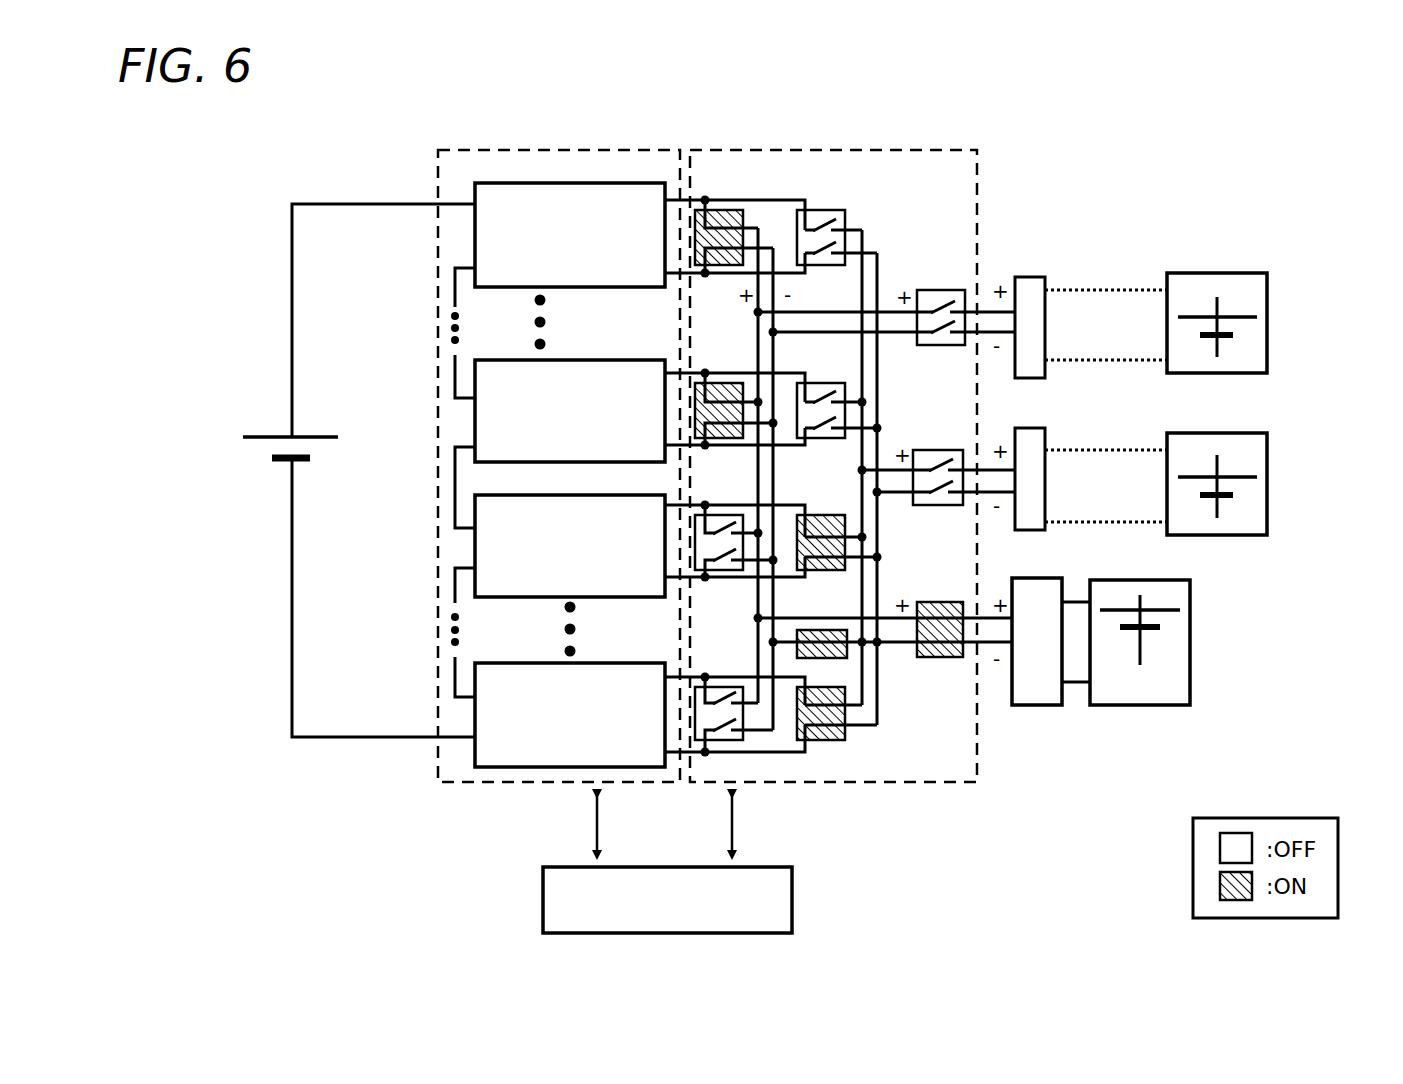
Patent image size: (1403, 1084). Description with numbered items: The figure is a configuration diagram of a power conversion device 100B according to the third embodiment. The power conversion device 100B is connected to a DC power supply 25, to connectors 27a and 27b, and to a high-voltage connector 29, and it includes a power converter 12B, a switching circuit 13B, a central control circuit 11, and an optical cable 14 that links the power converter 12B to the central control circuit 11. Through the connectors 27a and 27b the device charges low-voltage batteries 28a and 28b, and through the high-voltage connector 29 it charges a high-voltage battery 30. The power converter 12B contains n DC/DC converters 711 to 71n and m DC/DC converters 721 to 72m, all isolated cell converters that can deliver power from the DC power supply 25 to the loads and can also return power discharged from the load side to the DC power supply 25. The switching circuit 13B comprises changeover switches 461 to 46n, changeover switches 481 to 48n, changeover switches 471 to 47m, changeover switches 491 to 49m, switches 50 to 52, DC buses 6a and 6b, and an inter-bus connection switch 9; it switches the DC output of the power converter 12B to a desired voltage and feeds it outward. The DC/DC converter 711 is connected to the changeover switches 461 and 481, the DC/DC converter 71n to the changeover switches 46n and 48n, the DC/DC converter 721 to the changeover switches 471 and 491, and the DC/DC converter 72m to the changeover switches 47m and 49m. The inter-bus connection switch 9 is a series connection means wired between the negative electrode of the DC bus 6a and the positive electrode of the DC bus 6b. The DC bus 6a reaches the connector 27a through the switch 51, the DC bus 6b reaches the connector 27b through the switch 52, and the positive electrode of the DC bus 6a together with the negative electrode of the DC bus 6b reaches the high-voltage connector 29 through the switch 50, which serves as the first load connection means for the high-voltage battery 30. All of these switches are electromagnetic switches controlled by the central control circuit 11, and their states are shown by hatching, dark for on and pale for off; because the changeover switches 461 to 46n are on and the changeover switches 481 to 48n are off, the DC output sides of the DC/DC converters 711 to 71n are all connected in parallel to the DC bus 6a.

The power conversion device 100B is at (990, 110).
The DC bus 6a is at (768, 253).
The DC bus 6b is at (875, 258).
The DC/DC converter 711 is at (555, 183).
The DC/DC converter 71n is at (560, 360).
The DC/DC converter 721 is at (560, 495).
The DC/DC converter 72m is at (572, 663).
The changeover switch 461 is at (720, 210).
The changeover switch 481 is at (820, 210).
The changeover switch 46n is at (720, 383).
The changeover switch 48n is at (822, 383).
The changeover switch 471 is at (722, 515).
The changeover switch 491 is at (824, 515).
The changeover switch 47m is at (722, 687).
The changeover switch 49m is at (830, 742).
The inter-bus connection switch 9 is at (840, 660).
The switch 51 is at (922, 285).
The switch 52 is at (920, 448).
The switch 50 is at (922, 600).
The connector 27a is at (1035, 277).
The connector 27b is at (1045, 440).
The low-voltage battery 28a is at (1267, 310).
The low-voltage battery 28b is at (1267, 472).
The high-voltage connector 29 is at (1032, 707).
The high-voltage battery 30 is at (1195, 642).
The DC power supply 25 is at (280, 462).
The power converter 12B is at (430, 783).
The switching circuit 13B is at (840, 783).
The optical cable 14 is at (597, 816).
The central control circuit 11 is at (543, 885).